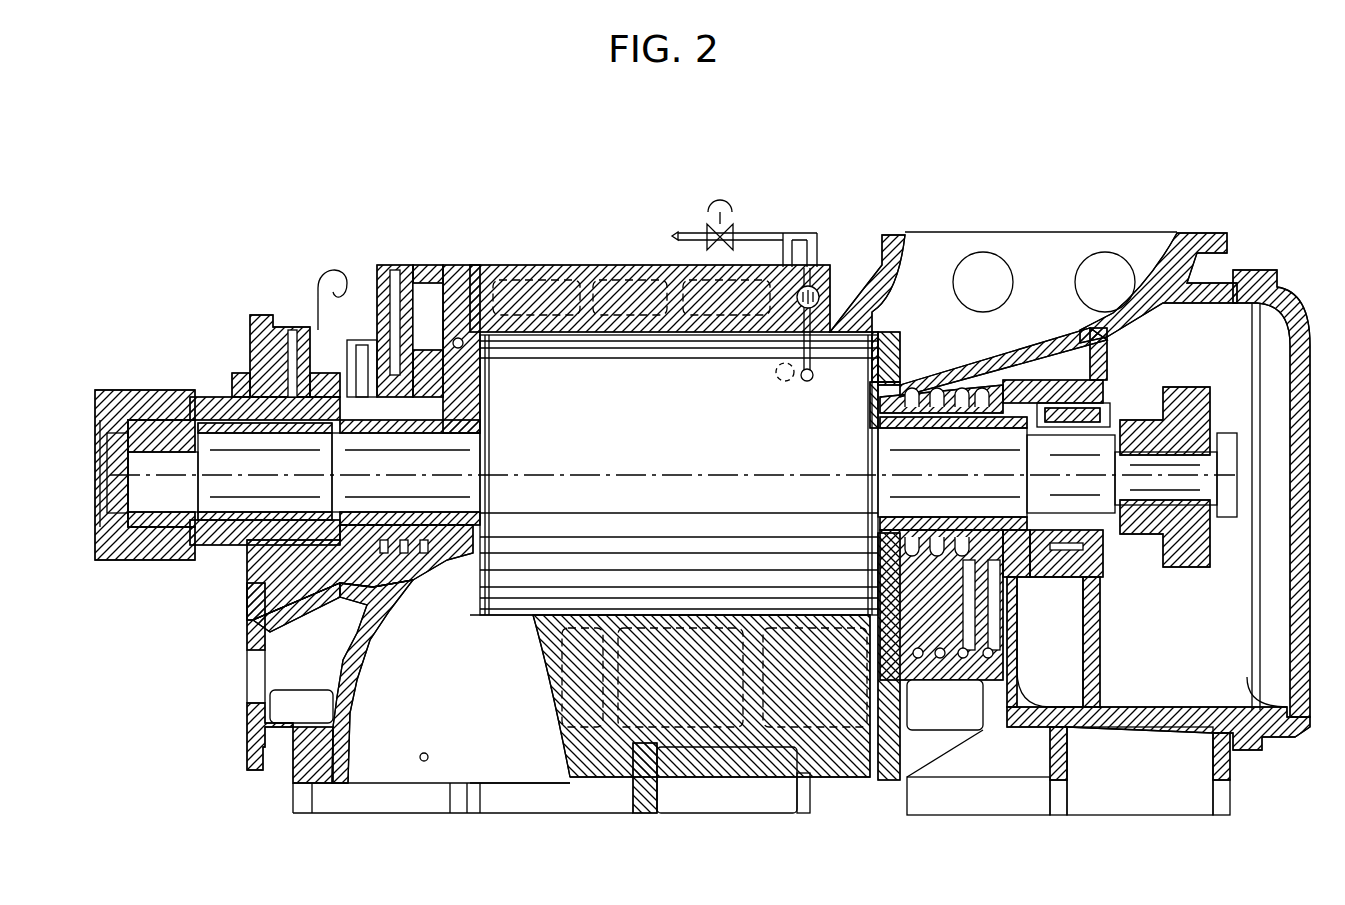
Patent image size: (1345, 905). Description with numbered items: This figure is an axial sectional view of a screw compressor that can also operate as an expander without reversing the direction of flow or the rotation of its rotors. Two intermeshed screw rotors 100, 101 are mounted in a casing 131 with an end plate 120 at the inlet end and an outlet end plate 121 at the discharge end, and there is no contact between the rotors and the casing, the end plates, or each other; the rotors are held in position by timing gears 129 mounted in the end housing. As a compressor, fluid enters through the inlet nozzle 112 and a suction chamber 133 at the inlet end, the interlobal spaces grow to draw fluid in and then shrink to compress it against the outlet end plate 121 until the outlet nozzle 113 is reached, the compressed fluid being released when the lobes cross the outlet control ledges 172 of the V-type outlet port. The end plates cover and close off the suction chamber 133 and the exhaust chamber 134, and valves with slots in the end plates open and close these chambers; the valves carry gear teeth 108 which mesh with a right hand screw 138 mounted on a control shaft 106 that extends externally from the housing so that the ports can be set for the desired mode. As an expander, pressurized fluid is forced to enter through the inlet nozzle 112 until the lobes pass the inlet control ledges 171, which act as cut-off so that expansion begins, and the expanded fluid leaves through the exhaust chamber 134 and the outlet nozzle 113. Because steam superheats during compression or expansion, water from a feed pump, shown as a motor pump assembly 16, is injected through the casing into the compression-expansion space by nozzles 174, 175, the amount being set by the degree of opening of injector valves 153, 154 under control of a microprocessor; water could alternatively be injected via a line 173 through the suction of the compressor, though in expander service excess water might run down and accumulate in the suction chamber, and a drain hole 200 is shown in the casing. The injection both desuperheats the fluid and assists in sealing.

The motor pump assembly 16 is at (183, 272).
The screw rotor 100 is at (670, 575).
The screw rotor 101 is at (679, 621).
The control shaft 106 is at (437, 330).
The gear teeth 108 is at (878, 592).
The inlet nozzle 112 is at (1047, 205).
The outlet nozzle 113 is at (450, 603).
The end plate 120 is at (920, 658).
The outlet end plate 121 is at (457, 338).
The timing gears 129 is at (1178, 565).
The casing 131 is at (594, 275).
The suction chamber 133 is at (995, 455).
The exhaust chamber 134 is at (488, 378).
The right hand screw 138 is at (865, 696).
The injector valve 153 is at (710, 228).
The injector valve 154 is at (744, 225).
The inlet control ledges 171 is at (862, 265).
The outlet control ledges 172 is at (505, 618).
The line 173 is at (787, 232).
The nozzle 174 is at (827, 268).
The nozzle 175 is at (775, 384).
The drain hole 200 is at (423, 762).